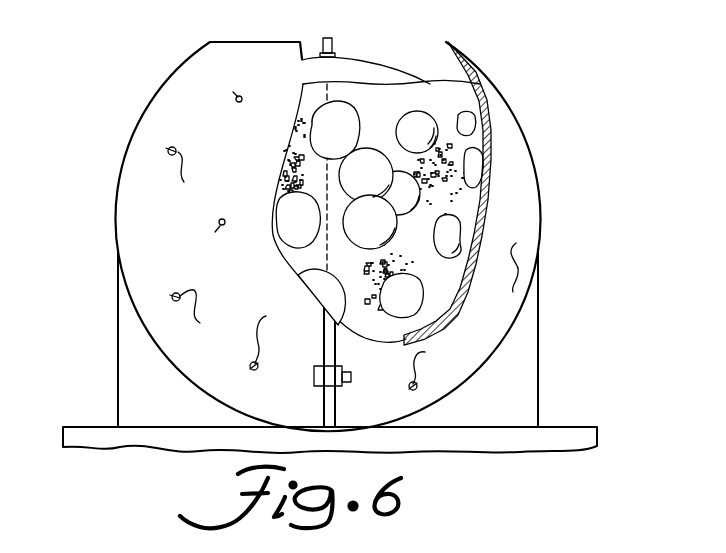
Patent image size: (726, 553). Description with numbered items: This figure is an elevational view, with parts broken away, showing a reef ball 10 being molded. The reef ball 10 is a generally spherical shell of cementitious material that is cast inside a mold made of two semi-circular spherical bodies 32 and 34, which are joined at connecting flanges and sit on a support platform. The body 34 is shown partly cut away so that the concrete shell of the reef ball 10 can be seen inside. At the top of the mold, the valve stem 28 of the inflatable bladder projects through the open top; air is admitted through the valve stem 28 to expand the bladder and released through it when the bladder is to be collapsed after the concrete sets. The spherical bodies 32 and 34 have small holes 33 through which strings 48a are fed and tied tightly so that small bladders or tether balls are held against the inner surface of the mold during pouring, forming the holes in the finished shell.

The reef ball 10 is at (378, 103).
The valve stem 28 is at (333, 50).
The semi-circular spherical body 32 is at (176, 80).
The holes in the mold 33 is at (342, 241).
The semi-circular spherical body 34 is at (517, 116).
The strings 48a is at (515, 245).